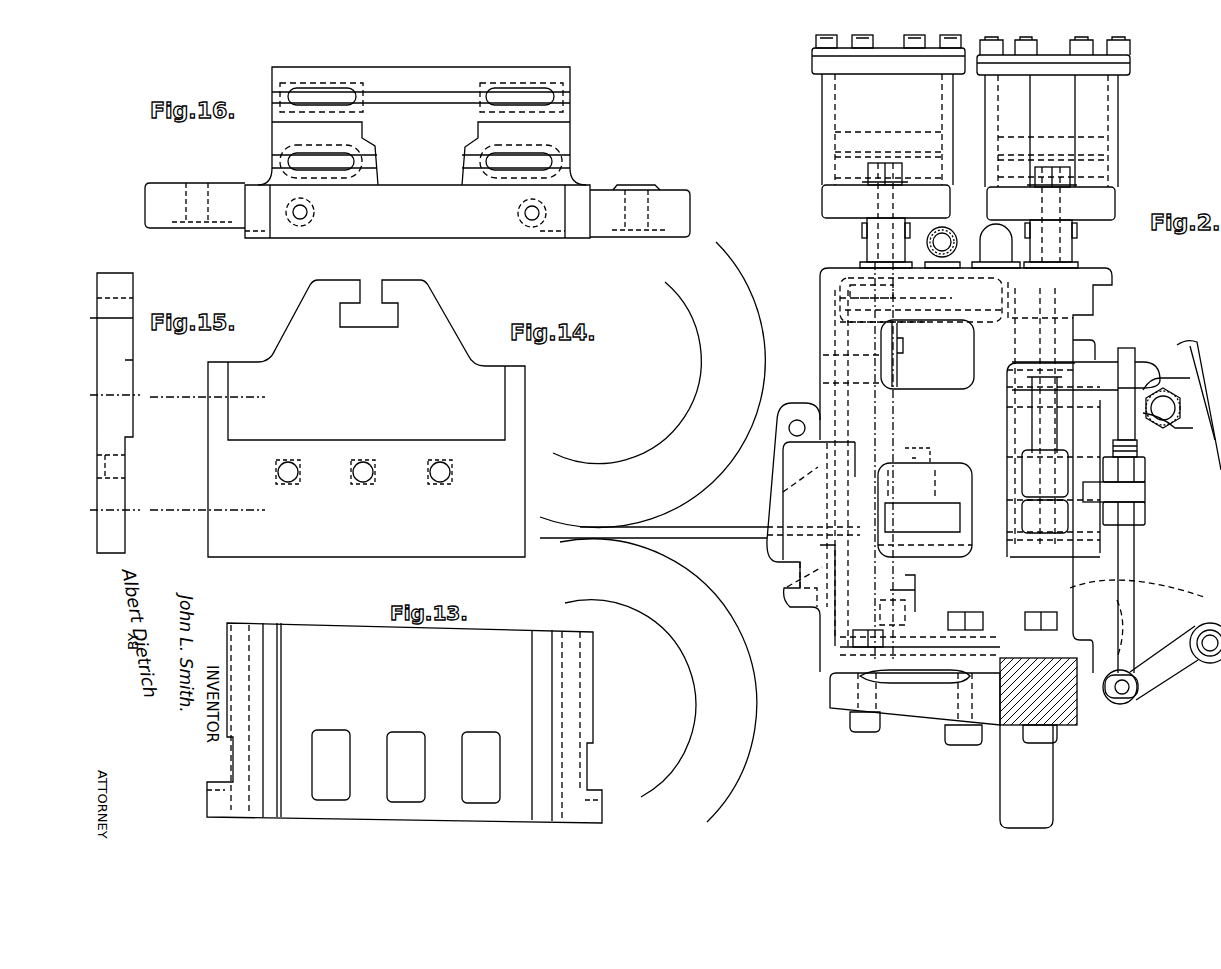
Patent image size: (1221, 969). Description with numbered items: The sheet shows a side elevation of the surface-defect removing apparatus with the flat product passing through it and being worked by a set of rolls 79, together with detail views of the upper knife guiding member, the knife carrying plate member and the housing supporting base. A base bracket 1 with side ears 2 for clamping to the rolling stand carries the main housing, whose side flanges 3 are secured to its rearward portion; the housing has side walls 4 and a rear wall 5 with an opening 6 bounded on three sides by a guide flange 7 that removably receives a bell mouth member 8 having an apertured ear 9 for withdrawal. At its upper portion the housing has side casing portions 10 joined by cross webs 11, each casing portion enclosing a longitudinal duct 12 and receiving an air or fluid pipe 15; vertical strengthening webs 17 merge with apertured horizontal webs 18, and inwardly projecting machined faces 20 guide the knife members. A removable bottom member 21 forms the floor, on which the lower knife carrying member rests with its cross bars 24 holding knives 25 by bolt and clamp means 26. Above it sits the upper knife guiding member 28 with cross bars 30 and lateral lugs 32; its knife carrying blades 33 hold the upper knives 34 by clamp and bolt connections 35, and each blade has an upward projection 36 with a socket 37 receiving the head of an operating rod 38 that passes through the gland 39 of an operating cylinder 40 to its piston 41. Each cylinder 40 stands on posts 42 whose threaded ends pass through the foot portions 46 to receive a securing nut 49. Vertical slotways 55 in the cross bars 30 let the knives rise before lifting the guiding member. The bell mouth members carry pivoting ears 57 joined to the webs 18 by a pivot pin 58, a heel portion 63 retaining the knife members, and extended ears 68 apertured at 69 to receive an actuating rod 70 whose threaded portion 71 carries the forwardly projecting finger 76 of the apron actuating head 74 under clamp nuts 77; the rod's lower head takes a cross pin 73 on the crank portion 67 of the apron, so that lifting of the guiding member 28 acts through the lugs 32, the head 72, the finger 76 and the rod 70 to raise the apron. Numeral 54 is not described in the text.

In FIG. 16, the base bracket 1 is at (555, 130).
In FIG. 2, the base bracket 1 is at (932, 712).
In FIG. 16, the side ears 2 is at (672, 197).
In FIG. 2, the side ears 2 is at (1045, 790).
In FIG. 2, the side flanges 3 is at (948, 622).
In FIG. 2, the side walls 4 is at (935, 392).
In FIG. 2, the rear wall 5 is at (828, 381).
In FIG. 2, the opening 6 is at (790, 590).
In FIG. 2, the guide flange 7 is at (783, 573).
In FIG. 2, the bell mouth member 8 is at (772, 463).
In FIG. 2, the apertured ear 9 is at (792, 408).
In FIG. 2, the side casing portions 10 is at (838, 302).
In FIG. 2, the cross webs 11 is at (1100, 282).
In FIG. 2, the longitudinal duct 12 is at (927, 354).
In FIG. 2, the air or fluid pipe 15 is at (990, 240).
In FIG. 2, the vertical strengthening webs 17 is at (1010, 412).
In FIG. 2, the horizontal webs 18 is at (1000, 353).
In FIG. 2, the machined faces 20 is at (845, 343).
In FIG. 2, the removable bottom member 21 is at (940, 683).
In FIG. 2, the cross bars 24 is at (835, 637).
In FIG. 2, the knives 25 is at (890, 562).
In FIG. 2, the bolt and clamp means 26 is at (895, 600).
In FIG. 13, the upper knife guiding member 28 is at (318, 615).
In FIG. 2, the upper knife guiding member 28 is at (940, 365).
In FIG. 13, the cross bars 30 is at (365, 622).
In FIG. 13, the lateral projecting lugs 32 is at (216, 786).
In FIG. 15, the knife carrying blades 33 is at (128, 493).
In FIG. 14, the knife carrying blades 33 is at (337, 418).
In FIG. 2, the knife carrying blades 33 is at (1060, 430).
In FIG. 2, the upper knives 34 is at (900, 512).
In FIG. 2, the clamp and bolt connections 35 is at (915, 448).
In FIG. 15, the upward projection 36 is at (128, 358).
In FIG. 14, the upward projection 36 is at (442, 332).
In FIG. 2, the upward projection 36 is at (880, 360).
In FIG. 15, the socket 37 is at (136, 297).
In FIG. 14, the socket 37 is at (373, 332).
In FIG. 2, the operating rod 38 is at (855, 340).
In FIG. 2, the gland 39 is at (860, 233).
In FIG. 2, the operating cylinder 40 is at (935, 122).
In FIG. 2, the piston 41 is at (840, 162).
In FIG. 2, the posts 42 is at (900, 232).
In FIG. 2, the foot portions 46 is at (988, 195).
In FIG. 2, the securing nut 49 is at (885, 160).
In FIG. 2, the cylinder 54 is at (1065, 118).
In FIG. 13, the vertical slotways 55 is at (350, 722).
In FIG. 2, the vertical slotways 55 is at (858, 428).
In FIG. 2, the pivoting ears 57 is at (1010, 388).
In FIG. 2, the pivot pin 58 is at (1012, 437).
In FIG. 2, the heel portion 63 is at (1085, 347).
In FIG. 2, the crank portion 67 is at (1150, 680).
In FIG. 2, the ears 68 is at (1150, 375).
In FIG. 2, the aperture 69 is at (1165, 408).
In FIG. 2, the actuating rod 70 is at (1138, 338).
In FIG. 2, the threaded portion 71 is at (1140, 448).
In FIG. 2, the head 72 is at (1137, 703).
In FIG. 2, the cross pin 73 is at (1126, 700).
In FIG. 2, the apron actuating head 74 is at (1010, 515).
In FIG. 2, the forwardly projecting finger 76 is at (1145, 492).
In FIG. 2, the clamp nuts 77 is at (1145, 472).
In FIG. 2, the rolls 79 is at (662, 530).